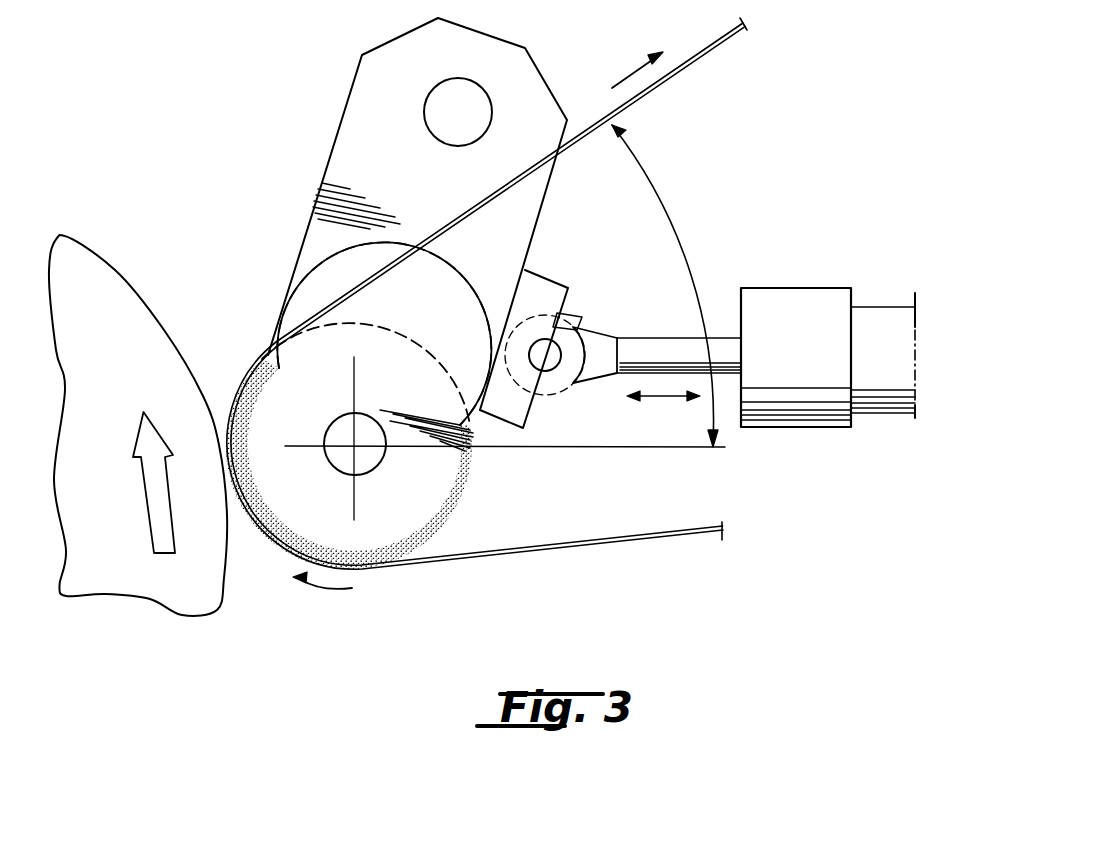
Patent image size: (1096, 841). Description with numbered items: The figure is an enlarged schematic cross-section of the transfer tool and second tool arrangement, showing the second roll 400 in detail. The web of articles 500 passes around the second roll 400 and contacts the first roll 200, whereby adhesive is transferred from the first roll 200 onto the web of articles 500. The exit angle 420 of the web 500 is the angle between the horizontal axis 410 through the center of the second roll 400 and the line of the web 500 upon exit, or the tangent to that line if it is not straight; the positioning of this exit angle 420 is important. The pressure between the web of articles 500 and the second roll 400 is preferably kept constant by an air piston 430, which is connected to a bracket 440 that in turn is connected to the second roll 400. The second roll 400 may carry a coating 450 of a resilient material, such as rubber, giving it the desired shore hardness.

The first roll 200 is at (103, 289).
The second roll 400 is at (402, 365).
The horizontal axis 410 is at (623, 448).
The exit angle 420 is at (663, 220).
The air piston 430 is at (808, 308).
The bracket 440 is at (368, 147).
The coating 450 is at (283, 553).
The web of articles 500 is at (683, 72).